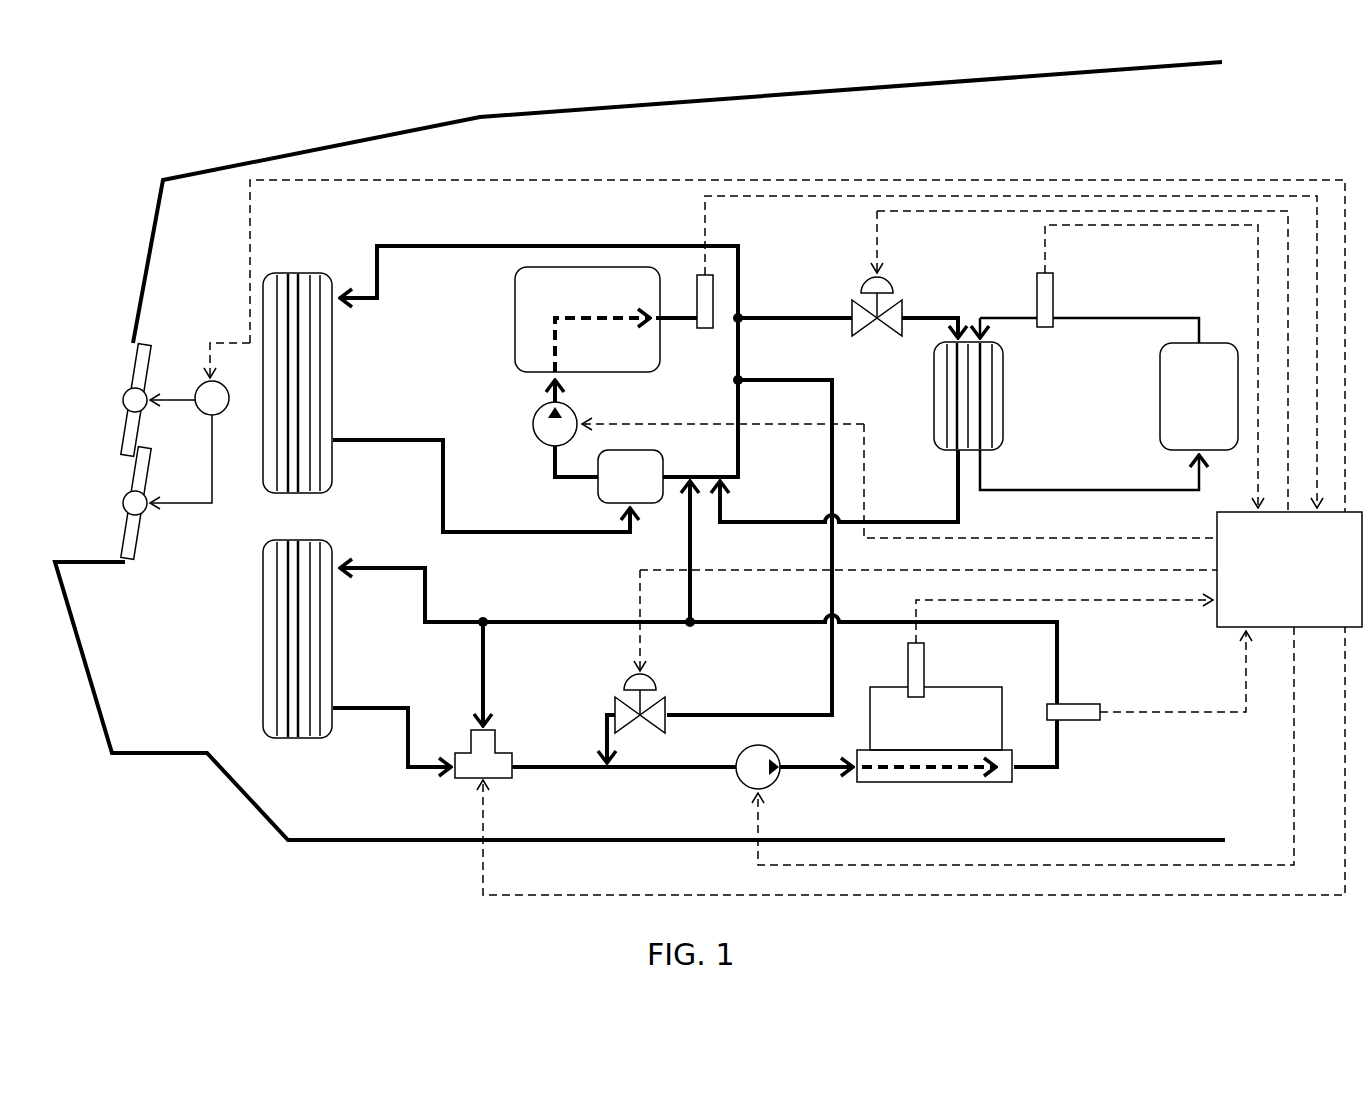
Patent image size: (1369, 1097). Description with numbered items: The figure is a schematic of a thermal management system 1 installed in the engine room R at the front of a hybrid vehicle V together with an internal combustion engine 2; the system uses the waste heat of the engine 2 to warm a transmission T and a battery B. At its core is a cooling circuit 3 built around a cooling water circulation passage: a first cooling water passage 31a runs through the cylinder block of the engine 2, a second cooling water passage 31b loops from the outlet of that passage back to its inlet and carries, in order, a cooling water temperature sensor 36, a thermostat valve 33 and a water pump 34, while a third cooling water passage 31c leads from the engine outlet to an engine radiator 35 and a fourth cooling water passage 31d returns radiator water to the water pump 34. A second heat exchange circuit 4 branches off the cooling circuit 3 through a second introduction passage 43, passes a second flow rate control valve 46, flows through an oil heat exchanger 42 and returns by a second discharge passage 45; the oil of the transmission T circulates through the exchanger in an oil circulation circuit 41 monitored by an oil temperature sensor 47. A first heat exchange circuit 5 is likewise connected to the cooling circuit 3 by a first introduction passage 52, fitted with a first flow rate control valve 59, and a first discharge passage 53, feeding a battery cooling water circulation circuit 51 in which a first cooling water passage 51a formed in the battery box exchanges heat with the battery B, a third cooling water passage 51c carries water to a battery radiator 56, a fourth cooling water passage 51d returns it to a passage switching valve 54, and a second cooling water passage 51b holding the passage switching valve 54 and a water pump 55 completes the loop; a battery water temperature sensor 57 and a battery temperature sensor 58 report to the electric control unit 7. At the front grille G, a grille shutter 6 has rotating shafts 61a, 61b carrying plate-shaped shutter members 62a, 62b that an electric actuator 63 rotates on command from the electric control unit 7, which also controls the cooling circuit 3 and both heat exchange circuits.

The thermal management system 1 is at (1195, 291).
The internal combustion engine 2 is at (634, 374).
The cooling circuit 3 is at (767, 285).
The second heat exchange circuit 4 is at (929, 292).
The first heat exchange circuit 5 is at (403, 544).
The grille shutter 6 is at (186, 300).
The electric control unit 7 is at (1221, 631).
The first cooling water passage 31a is at (555, 350).
The second cooling water passage 31b is at (740, 470).
The third cooling water passage 31c is at (473, 248).
The fourth cooling water passage 31d is at (480, 532).
The thermostat valve 33 is at (660, 504).
The water pump 34 is at (534, 425).
The engine radiator 35 is at (333, 357).
The cooling water temperature sensor 36 is at (706, 330).
The oil circulation circuit 41 is at (1105, 322).
The oil heat exchanger 42 is at (1005, 430).
The second introduction passage 43 is at (756, 322).
The second discharge passage 45 is at (889, 520).
The second flow rate control valve 46 is at (891, 336).
The oil temperature sensor 47 is at (1045, 328).
The battery cooling water circulation circuit 51 is at (375, 774).
The first cooling water passage 51a is at (962, 784).
The second cooling water passage 51b is at (567, 770).
The third cooling water passage 51c is at (558, 617).
The fourth cooling water passage 51d is at (426, 764).
The first introduction passage 52 is at (830, 660).
The first discharge passage 53 is at (695, 547).
The passage switching valve 54 is at (511, 743).
The water pump 55 is at (750, 784).
The battery radiator 56 is at (334, 644).
The battery water temperature sensor 57 is at (1078, 705).
The battery temperature sensor 58 is at (906, 680).
The first flow rate control valve 59 is at (616, 689).
The rotating shaft 61a is at (123, 400).
The rotating shaft 61b is at (123, 505).
The shutter member 62a is at (125, 445).
The shutter member 62b is at (125, 544).
The electric actuator 63 is at (222, 416).
The vehicle V is at (200, 89).
The front grille G is at (136, 350).
The engine room R is at (1126, 153).
The transmission T is at (1160, 424).
The battery B is at (956, 692).